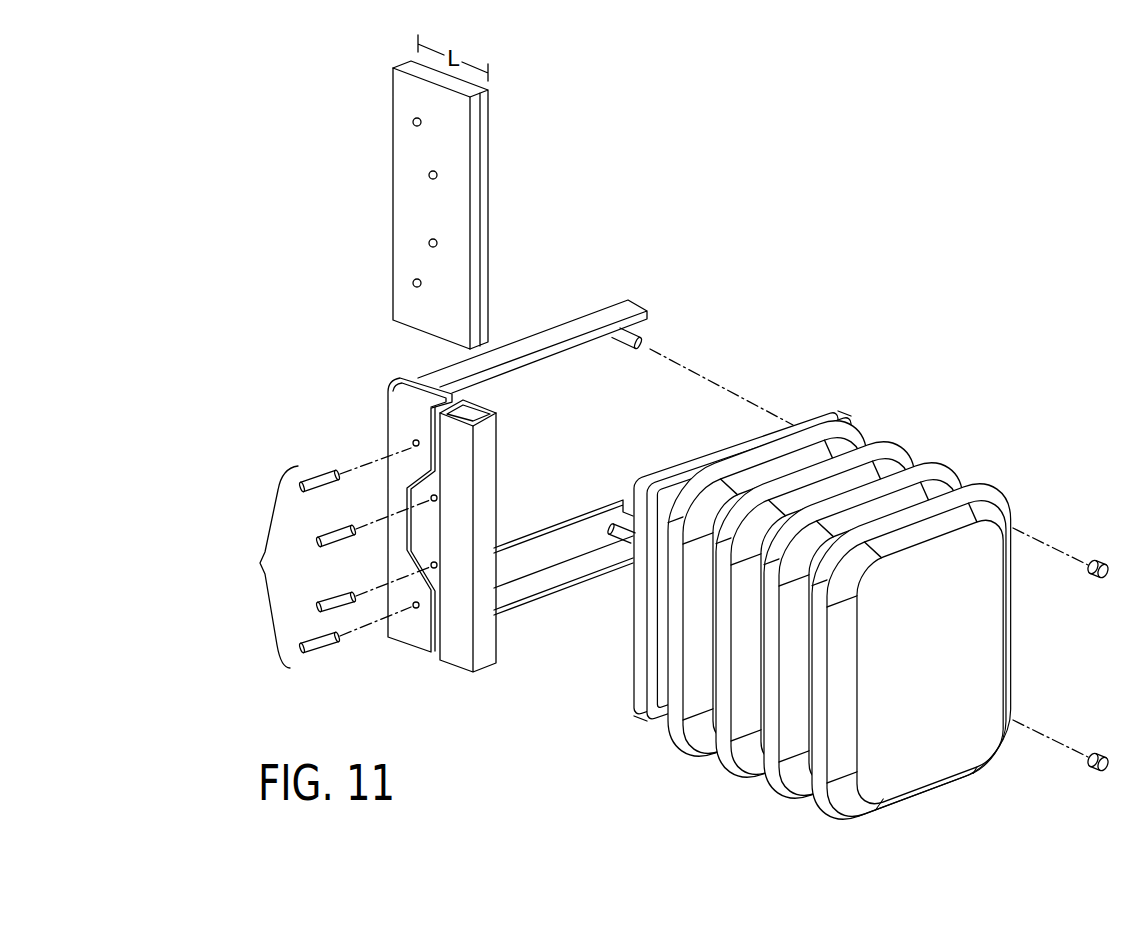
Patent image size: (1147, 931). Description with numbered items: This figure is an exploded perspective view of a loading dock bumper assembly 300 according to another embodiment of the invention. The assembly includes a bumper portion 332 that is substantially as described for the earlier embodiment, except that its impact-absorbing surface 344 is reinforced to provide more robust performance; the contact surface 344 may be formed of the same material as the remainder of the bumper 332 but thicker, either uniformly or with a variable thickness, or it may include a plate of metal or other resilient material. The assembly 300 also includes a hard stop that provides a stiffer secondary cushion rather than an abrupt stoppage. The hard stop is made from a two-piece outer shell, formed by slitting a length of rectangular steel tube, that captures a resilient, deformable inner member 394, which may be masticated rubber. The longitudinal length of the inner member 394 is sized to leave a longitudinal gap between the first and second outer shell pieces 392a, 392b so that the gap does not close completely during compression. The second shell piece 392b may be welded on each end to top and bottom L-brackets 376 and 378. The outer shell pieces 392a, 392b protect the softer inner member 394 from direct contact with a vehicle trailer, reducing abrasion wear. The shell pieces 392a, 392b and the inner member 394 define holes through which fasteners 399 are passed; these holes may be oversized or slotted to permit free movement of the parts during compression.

The loading dock bumper assembly 300 is at (922, 255).
The bumper portion 332 is at (696, 699).
The impact-absorbing surface 344 is at (978, 638).
The top L-bracket 376 is at (615, 312).
The bottom L-bracket 378 is at (550, 582).
The first outer shell piece 392a is at (487, 458).
The second outer shell piece 392b is at (390, 418).
The inner member 394 is at (490, 143).
The fasteners 399 is at (259, 577).